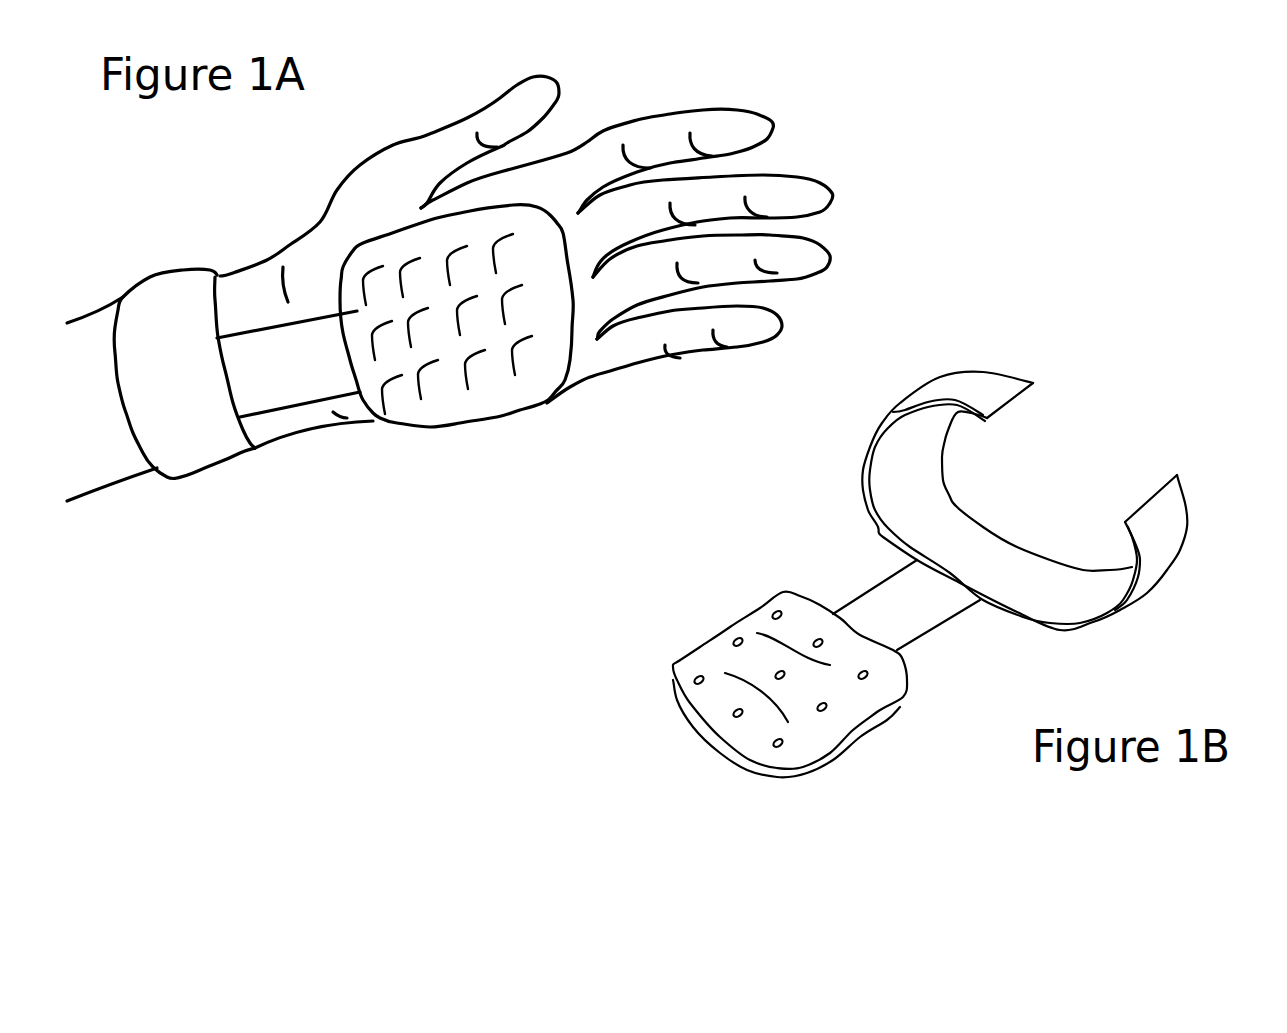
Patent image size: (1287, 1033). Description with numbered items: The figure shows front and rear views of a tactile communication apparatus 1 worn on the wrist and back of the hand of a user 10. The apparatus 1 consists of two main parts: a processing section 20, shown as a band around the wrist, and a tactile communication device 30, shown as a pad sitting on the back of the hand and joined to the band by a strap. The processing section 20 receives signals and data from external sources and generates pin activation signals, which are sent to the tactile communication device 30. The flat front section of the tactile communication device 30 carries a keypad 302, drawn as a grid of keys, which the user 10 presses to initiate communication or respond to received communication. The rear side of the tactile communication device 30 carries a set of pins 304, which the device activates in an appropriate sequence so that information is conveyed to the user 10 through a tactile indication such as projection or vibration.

In FIG. 1A, the tactile communication apparatus 1 is at (271, 147).
In FIG. 1B, the tactile communication apparatus 1 is at (1126, 427).
In FIG. 1A, the user 10 is at (417, 146).
In FIG. 1A, the processing section 20 is at (167, 272).
In FIG. 1B, the processing section 20 is at (940, 377).
In FIG. 1A, the tactile communication device 30 is at (530, 406).
In FIG. 1B, the tactile communication device 30 is at (904, 697).
In FIG. 1A, the keypad 302 is at (438, 387).
In FIG. 1B, the set of pins 304 is at (695, 679).